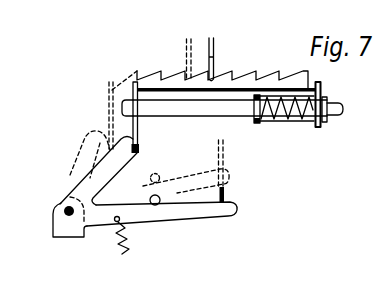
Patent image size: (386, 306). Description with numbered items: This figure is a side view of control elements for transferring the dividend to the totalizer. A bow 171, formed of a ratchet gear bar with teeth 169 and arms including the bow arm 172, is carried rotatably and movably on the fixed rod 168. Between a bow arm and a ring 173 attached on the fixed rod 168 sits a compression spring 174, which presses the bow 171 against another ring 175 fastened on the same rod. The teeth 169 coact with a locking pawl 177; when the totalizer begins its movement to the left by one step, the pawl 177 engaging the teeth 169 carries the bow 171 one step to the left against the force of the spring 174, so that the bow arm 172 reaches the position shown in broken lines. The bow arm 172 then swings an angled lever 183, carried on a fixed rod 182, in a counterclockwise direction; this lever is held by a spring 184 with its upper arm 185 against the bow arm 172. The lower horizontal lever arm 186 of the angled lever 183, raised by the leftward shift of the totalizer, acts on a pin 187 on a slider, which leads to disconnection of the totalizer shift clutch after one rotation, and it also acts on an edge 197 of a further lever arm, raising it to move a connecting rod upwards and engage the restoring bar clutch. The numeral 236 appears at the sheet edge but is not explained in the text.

The frame 236 is at (10, 45).
The bow 171 is at (152, 78).
The ratchet gear bar teeth 169 is at (302, 76).
The locking pawl 177 is at (214, 57).
The fixed rod 168 is at (199, 109).
The bow arm 172 is at (139, 149).
The ring 173 is at (256, 124).
The compression spring 174 is at (292, 123).
The ring 175 is at (327, 126).
The edge 197 is at (226, 199).
The upper arm 185 is at (82, 183).
The fixed rod 182 is at (63, 209).
The lever arm 186 is at (190, 214).
The pin 187 is at (157, 205).
The angled lever 183 is at (98, 200).
The spring 184 is at (122, 254).